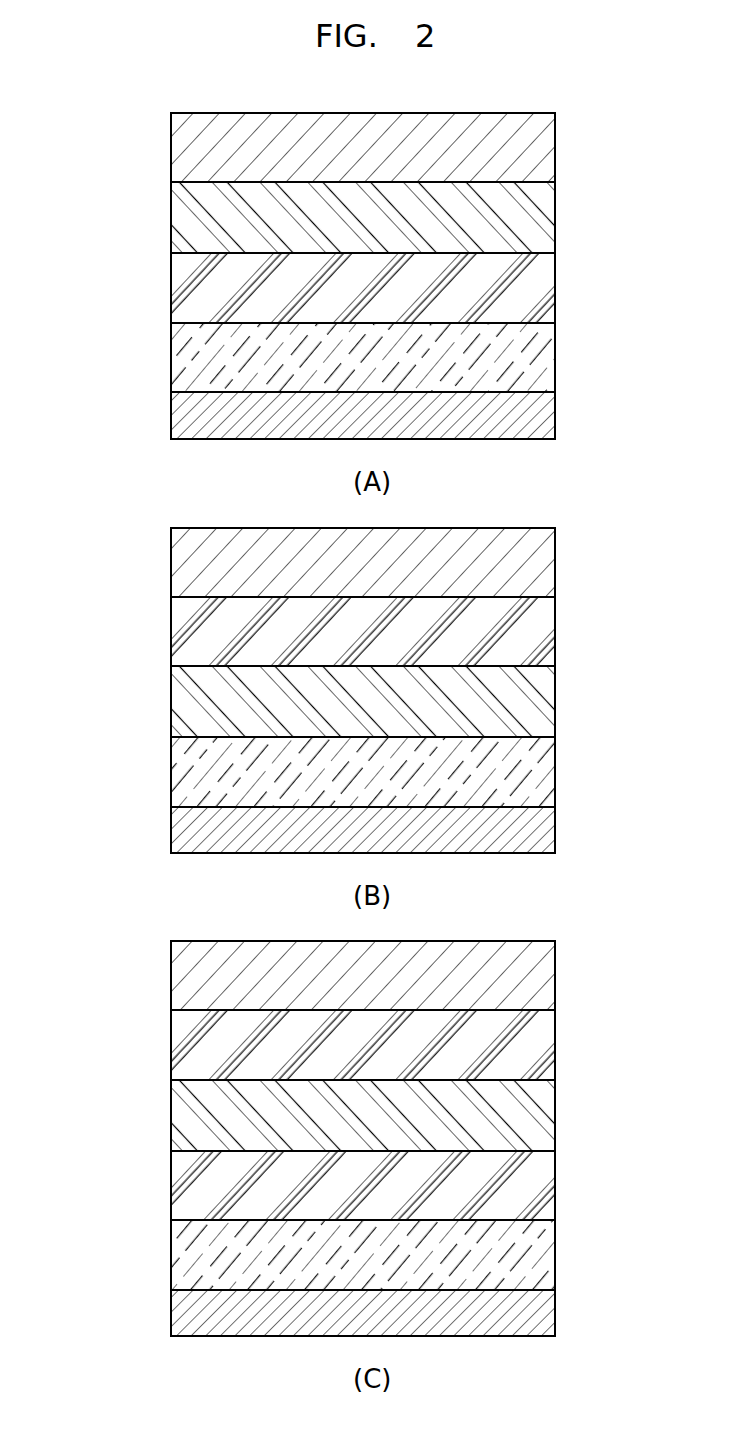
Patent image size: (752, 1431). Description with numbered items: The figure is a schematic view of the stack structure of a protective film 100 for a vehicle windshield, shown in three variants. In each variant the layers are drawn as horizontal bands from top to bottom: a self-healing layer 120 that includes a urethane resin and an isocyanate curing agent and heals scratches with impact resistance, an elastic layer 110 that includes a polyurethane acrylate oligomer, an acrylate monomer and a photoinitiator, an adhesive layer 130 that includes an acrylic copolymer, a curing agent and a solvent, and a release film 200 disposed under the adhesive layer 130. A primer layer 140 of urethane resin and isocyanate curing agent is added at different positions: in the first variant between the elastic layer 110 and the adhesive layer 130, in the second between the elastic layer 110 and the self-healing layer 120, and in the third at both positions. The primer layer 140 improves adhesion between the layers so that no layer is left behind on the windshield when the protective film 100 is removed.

The protective film 100 is at (130, 119).
The elastic layer 110 is at (532, 217).
The self-healing layer 120 is at (532, 148).
The adhesive layer 130 is at (532, 357).
The primer layer 140 is at (532, 287).
The release film 200 is at (532, 413).